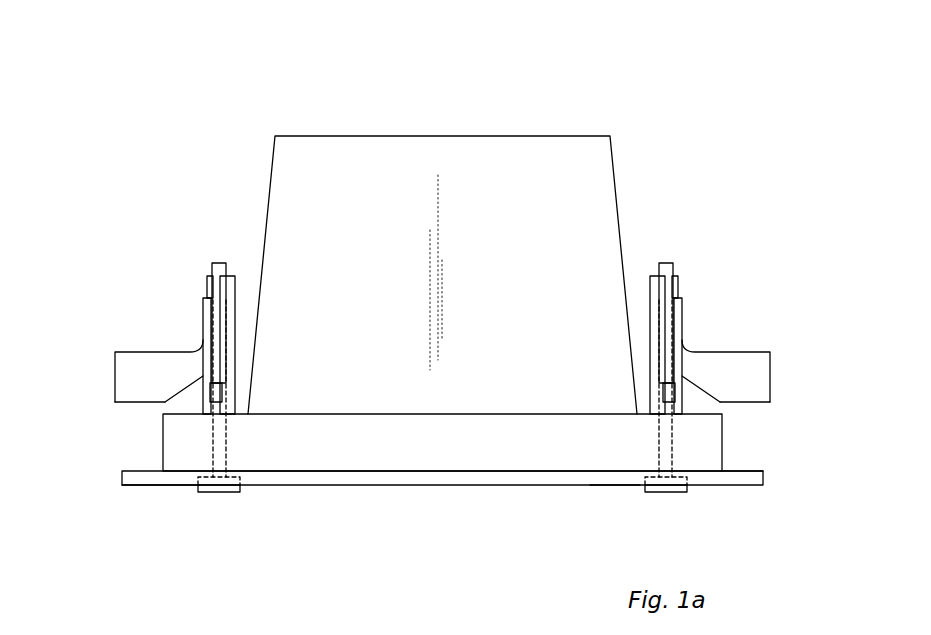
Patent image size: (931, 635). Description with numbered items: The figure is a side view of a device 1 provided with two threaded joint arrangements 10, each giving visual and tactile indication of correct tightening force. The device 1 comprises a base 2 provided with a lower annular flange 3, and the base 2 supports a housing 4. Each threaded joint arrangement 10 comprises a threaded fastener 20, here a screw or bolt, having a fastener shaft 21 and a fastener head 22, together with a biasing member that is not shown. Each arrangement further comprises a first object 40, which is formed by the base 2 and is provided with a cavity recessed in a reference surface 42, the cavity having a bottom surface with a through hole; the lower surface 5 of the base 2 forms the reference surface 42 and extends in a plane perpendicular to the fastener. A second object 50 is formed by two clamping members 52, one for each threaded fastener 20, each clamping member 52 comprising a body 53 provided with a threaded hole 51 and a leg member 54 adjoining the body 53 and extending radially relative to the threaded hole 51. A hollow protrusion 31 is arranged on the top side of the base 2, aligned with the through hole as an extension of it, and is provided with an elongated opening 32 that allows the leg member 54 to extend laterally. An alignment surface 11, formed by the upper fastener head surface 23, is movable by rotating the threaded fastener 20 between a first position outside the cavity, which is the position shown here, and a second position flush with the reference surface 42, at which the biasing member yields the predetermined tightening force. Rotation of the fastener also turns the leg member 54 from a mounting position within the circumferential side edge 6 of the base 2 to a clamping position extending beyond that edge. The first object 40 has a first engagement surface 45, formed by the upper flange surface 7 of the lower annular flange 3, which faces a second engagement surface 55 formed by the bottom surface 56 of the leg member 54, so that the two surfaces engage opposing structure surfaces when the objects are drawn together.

The device 1 is at (630, 90).
The base 2 is at (334, 454).
The lower annular flange 3 is at (753, 478).
The housing 4 is at (603, 163).
The lower surface 5 is at (147, 513).
The circumferential side edge 6 is at (163, 450).
The upper flange surface 7 is at (754, 446).
The threaded joint arrangement 10 is at (172, 212).
The alignment surface 11 is at (442, 515).
The threaded fastener 20 is at (192, 522).
The fastener shaft 21 is at (219, 262).
The fastener head 22 is at (243, 488).
The upper fastener head surface 23 is at (228, 492).
The hollow protrusion 31 is at (235, 290).
The elongated opening 32 is at (205, 281).
The first object 40 is at (605, 498).
The reference surface 42 is at (145, 485).
The first engagement surface 45 is at (738, 471).
The second object 50 is at (447, 355).
The threaded hole 51 is at (248, 360).
The clamping member 52 is at (145, 304).
The body 53 is at (207, 314).
The leg member 54 is at (128, 380).
The second engagement surface 55 is at (447, 428).
The bottom surface 56 is at (125, 403).